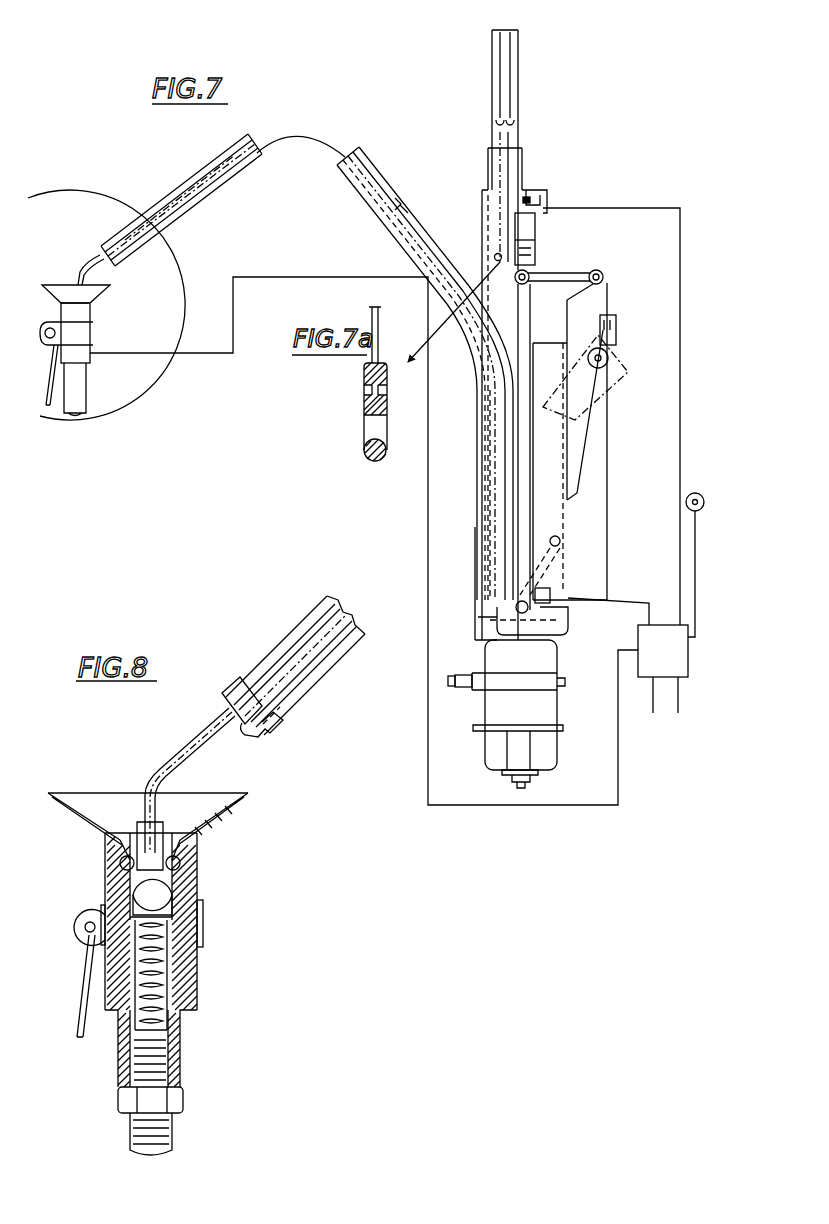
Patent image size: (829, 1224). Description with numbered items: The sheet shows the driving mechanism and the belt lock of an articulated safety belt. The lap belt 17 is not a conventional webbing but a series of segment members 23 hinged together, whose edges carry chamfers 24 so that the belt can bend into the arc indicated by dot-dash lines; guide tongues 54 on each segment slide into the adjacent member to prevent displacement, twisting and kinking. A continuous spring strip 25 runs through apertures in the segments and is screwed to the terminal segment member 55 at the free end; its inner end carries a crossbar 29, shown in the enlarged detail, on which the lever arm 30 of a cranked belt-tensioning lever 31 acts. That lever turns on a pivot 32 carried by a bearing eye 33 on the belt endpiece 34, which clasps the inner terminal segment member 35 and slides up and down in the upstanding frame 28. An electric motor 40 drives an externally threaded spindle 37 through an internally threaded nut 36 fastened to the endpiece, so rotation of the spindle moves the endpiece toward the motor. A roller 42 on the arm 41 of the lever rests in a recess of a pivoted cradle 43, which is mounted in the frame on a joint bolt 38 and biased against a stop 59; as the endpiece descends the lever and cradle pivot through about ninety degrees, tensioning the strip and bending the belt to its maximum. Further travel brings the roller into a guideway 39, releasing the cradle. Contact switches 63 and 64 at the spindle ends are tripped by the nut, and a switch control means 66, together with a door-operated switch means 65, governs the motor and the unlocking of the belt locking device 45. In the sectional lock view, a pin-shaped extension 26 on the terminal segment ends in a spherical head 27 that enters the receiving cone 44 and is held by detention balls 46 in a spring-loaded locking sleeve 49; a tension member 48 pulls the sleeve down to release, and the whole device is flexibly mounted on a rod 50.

In FIG. 7, the articulated belt 17 is at (340, 173).
In FIG. 8, the articulated belt 17 is at (282, 623).
In FIG. 7, the segment member 23 is at (380, 170).
In FIG. 7, the chamfer 24 is at (510, 135).
In FIG. 7, the spring strip 25 is at (152, 220).
In FIG. 7a, the spring strip 25 is at (373, 322).
In FIG. 8, the spring strip 25 is at (278, 683).
In FIG. 7, the pin-shaped extension 26 is at (78, 270).
In FIG. 8, the pin-shaped extension 26 is at (193, 748).
In FIG. 8, the spherical head 27 is at (162, 888).
In FIG. 7, the frame 28 is at (480, 425).
In FIG. 7, the crossbar 29 is at (495, 255).
In FIG. 7a, the crossbar 29 is at (363, 457).
In FIG. 7, the lever arm 30 is at (530, 265).
In FIG. 7, the belt-tensioning lever 31 is at (572, 283).
In FIG. 7, the pivot 32 is at (525, 281).
In FIG. 7, the bearing eye 33 is at (523, 242).
In FIG. 7, the belt endpiece 34 is at (524, 153).
In FIG. 7, the terminal segment member 35 is at (512, 178).
In FIG. 7, the internally threaded nut 36 is at (537, 228).
In FIG. 7, the externally threaded spindle 37 is at (527, 435).
In FIG. 7, the joint bolt 38 is at (604, 362).
In FIG. 7, the guideway 39 is at (570, 597).
In FIG. 7, the electric motor 40 is at (513, 713).
In FIG. 7, the arm 41 is at (573, 272).
In FIG. 7, the roller 42 is at (603, 277).
In FIG. 7, the pivoted cradle 43 is at (585, 317).
In FIG. 7, the receiving cone 44 is at (95, 292).
In FIG. 8, the receiving cone 44 is at (118, 800).
In FIG. 7, the belt locking device 45 is at (95, 330).
In FIG. 8, the belt locking device 45 is at (200, 903).
In FIG. 8, the detention ball 46 is at (122, 860).
In FIG. 7, the tension member 48 is at (52, 370).
In FIG. 8, the tension member 48 is at (83, 1020).
In FIG. 8, the locking sleeve 49 is at (107, 897).
In FIG. 8, the rod 50 is at (157, 1127).
In FIG. 7, the guide tongue 54 is at (402, 198).
In FIG. 7, the terminal segment member 55 is at (160, 198).
In FIG. 8, the terminal segment member 55 is at (347, 665).
In FIG. 7, the stop 59 is at (615, 347).
In FIG. 7, the contact switch 63 is at (542, 213).
In FIG. 7, the contact switch 64 is at (550, 590).
In FIG. 7, the door-operated switch means 65 is at (696, 499).
In FIG. 7, the switch control means 66 is at (650, 670).